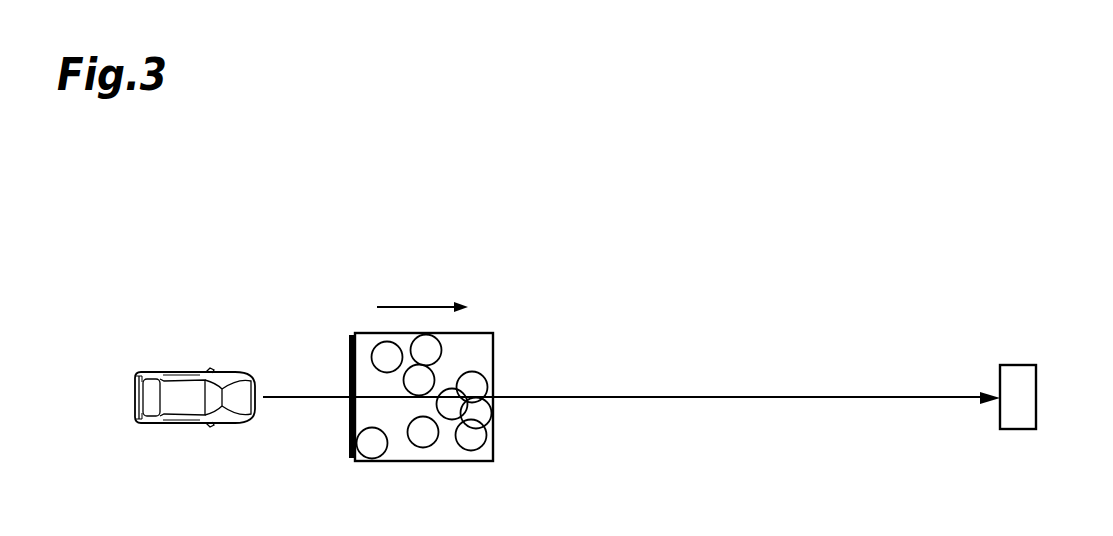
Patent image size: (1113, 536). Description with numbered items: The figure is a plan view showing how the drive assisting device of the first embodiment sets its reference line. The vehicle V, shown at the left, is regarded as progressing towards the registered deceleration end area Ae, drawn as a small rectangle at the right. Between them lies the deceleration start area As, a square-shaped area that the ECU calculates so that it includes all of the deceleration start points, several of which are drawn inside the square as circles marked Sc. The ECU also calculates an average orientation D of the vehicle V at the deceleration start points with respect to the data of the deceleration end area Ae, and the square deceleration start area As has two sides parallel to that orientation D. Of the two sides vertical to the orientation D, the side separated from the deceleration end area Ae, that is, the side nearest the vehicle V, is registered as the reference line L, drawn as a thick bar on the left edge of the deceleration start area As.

The vehicle V is at (181, 372).
The reference line L is at (349, 433).
The deceleration start area As is at (493, 352).
The scatterers Sc is at (423, 448).
The average orientation D is at (417, 306).
The deceleration end area Ae is at (1036, 386).